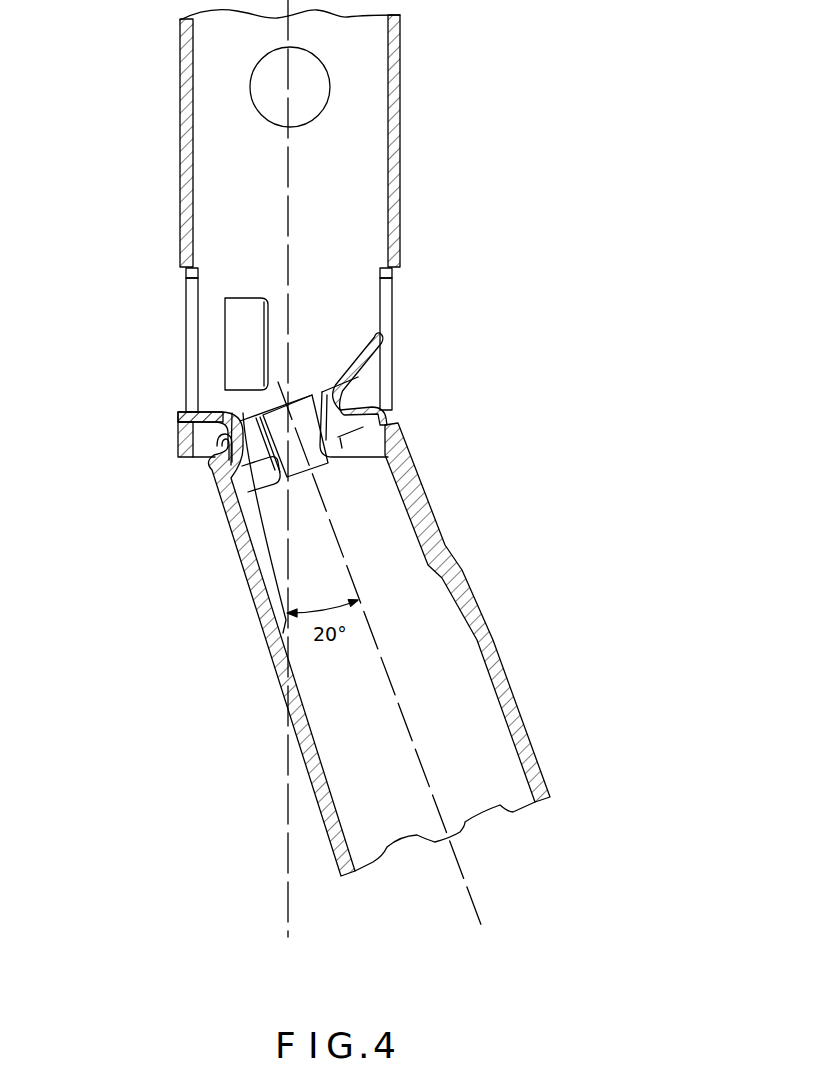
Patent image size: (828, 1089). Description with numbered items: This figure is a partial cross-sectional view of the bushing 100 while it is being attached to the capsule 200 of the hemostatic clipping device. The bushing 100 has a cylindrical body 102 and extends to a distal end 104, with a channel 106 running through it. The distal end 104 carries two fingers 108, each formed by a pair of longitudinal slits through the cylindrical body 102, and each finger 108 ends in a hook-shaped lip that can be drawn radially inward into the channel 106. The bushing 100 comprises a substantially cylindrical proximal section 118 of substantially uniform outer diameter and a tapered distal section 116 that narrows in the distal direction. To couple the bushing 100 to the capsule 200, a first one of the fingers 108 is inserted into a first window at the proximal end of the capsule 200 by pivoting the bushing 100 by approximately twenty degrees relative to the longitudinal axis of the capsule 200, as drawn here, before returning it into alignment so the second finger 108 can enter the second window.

The bushing 100 is at (373, 572).
The cylindrical body 102 is at (480, 613).
The distal end 104 is at (179, 417).
The channel 106 is at (327, 683).
The fingers 108 is at (383, 352).
The distal section 116 is at (245, 573).
The proximal section 118 is at (330, 812).
The capsule 200 is at (181, 143).